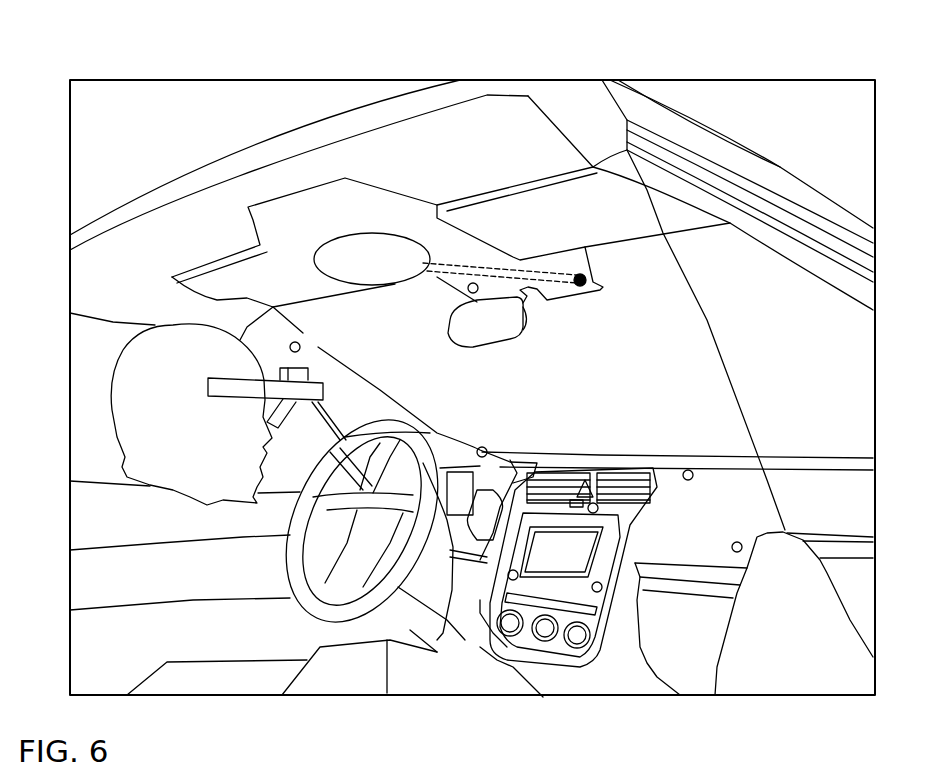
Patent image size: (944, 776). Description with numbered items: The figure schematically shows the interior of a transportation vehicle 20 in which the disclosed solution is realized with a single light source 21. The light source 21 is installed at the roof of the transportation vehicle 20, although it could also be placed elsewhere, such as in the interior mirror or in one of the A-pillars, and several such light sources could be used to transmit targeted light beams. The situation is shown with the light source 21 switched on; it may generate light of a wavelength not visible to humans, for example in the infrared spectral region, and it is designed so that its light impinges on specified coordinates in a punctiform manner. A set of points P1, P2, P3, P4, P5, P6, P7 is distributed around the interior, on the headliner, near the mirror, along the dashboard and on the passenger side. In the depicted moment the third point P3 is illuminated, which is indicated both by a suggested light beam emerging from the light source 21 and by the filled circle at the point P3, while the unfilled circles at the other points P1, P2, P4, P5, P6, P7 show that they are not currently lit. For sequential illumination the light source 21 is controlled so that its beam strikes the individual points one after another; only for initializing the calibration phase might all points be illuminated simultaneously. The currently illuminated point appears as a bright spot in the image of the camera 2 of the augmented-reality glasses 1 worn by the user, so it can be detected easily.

The augmented-reality glasses 1 is at (252, 396).
The camera 2 is at (288, 368).
The transportation vehicle 20 is at (198, 165).
The light source 21 is at (347, 237).
The first point P1 is at (315, 339).
The second point P2 is at (447, 298).
The third point P3 is at (595, 298).
The fourth point P4 is at (501, 436).
The fifth point P5 is at (613, 519).
The sixth point P6 is at (707, 485).
The seventh point P7 is at (757, 558).